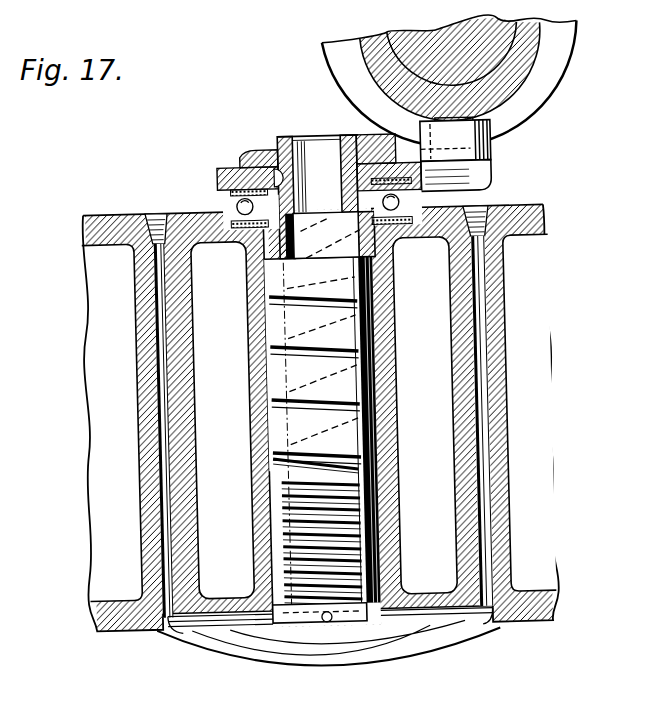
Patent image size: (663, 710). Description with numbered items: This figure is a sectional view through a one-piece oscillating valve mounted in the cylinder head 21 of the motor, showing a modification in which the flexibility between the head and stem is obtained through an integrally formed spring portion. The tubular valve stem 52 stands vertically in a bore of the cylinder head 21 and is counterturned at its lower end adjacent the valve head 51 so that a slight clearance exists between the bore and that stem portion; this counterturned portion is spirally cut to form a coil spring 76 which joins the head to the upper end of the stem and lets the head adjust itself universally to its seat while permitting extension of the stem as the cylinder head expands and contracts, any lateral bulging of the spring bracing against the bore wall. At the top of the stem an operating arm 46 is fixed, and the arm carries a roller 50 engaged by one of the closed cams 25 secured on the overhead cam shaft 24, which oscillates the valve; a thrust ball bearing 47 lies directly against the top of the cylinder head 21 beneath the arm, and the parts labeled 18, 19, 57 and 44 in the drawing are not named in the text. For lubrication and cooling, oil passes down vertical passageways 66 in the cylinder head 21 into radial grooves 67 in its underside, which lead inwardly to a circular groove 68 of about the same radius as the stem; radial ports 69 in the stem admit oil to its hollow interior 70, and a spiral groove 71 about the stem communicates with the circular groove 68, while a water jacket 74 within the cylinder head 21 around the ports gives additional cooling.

The nut 18 is at (253, 150).
The collar 19 is at (246, 172).
The cylinder head 21 is at (533, 525).
The overhead cam shaft 24 is at (387, 60).
The closed cam 25 is at (530, 107).
The base flange 44 is at (433, 632).
The operating arm 46 is at (490, 180).
The thrust ball bearing 47 is at (236, 205).
The roller 50 is at (497, 152).
The valve head 51 is at (318, 657).
The valve stem 52 is at (383, 388).
The ball race 57 is at (410, 228).
The passageway 66 is at (172, 473).
The radial groove 67 is at (183, 623).
The circular groove 68 is at (270, 623).
The radial port 69 is at (338, 628).
The hollow interior 70 is at (320, 197).
The spiral groove 71 is at (254, 470).
The water jacket 74 is at (533, 401).
The coil spring 76 is at (380, 552).